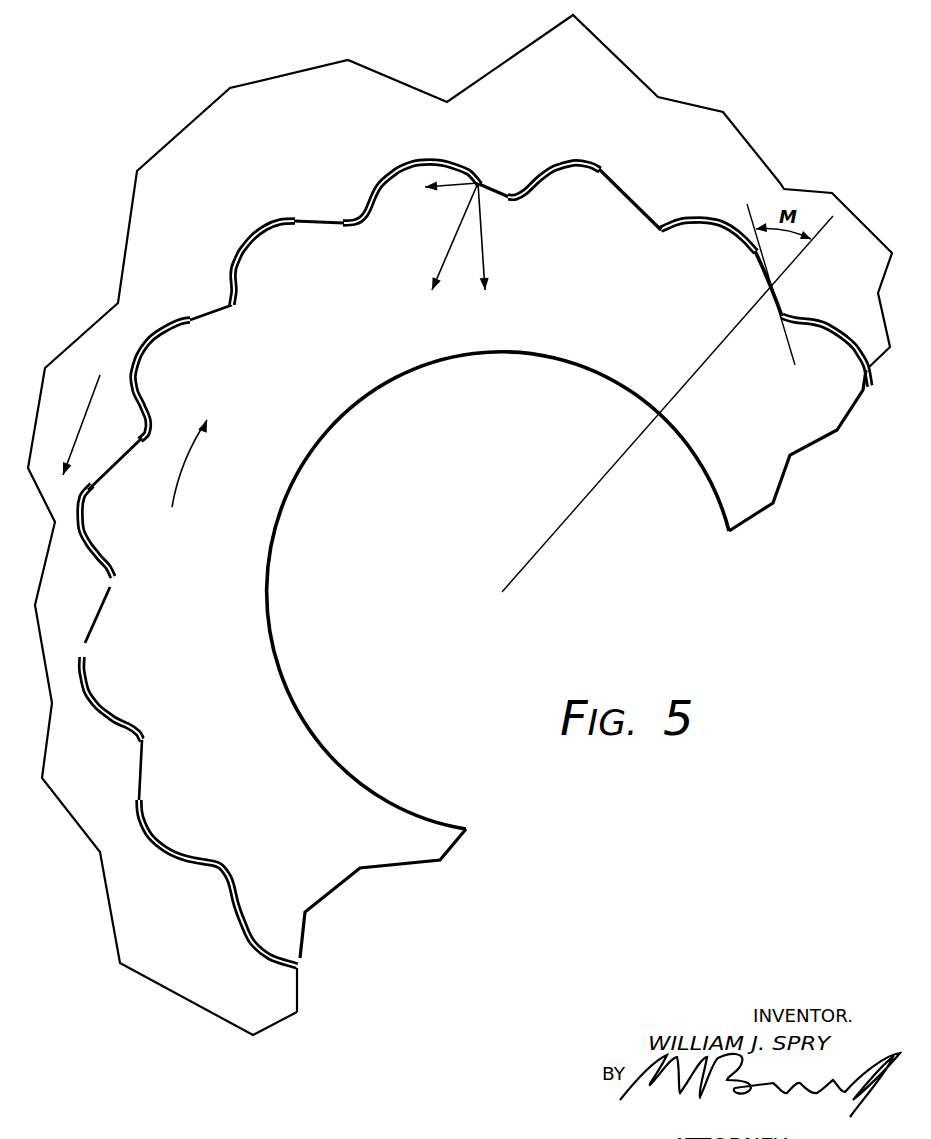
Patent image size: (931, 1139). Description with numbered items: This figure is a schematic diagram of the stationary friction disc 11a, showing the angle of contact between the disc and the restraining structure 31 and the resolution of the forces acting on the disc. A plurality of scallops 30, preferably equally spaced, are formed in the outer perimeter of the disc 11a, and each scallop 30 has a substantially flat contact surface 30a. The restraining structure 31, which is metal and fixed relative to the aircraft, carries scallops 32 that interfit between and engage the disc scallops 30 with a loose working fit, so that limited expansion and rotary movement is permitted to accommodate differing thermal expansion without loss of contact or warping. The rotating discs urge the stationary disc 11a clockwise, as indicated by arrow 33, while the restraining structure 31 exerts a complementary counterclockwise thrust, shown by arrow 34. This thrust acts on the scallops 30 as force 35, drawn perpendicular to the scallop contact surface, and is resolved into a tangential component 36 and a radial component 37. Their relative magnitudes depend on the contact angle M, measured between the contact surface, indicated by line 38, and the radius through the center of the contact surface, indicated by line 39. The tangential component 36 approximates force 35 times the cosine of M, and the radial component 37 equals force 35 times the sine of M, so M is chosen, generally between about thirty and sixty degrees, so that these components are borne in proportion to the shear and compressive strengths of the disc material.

The scallops 30 is at (287, 248).
The contact surface 30a is at (328, 225).
The restraining structure 31 is at (673, 125).
The scallops 32 is at (352, 205).
The arrow 33 is at (182, 477).
The arrow 34 is at (85, 405).
The force 35 is at (447, 257).
The tangential component 36 is at (452, 180).
The radial component 37 is at (482, 220).
The line 38 is at (750, 200).
The line 39 is at (827, 227).
The friction disc 11a is at (586, 353).